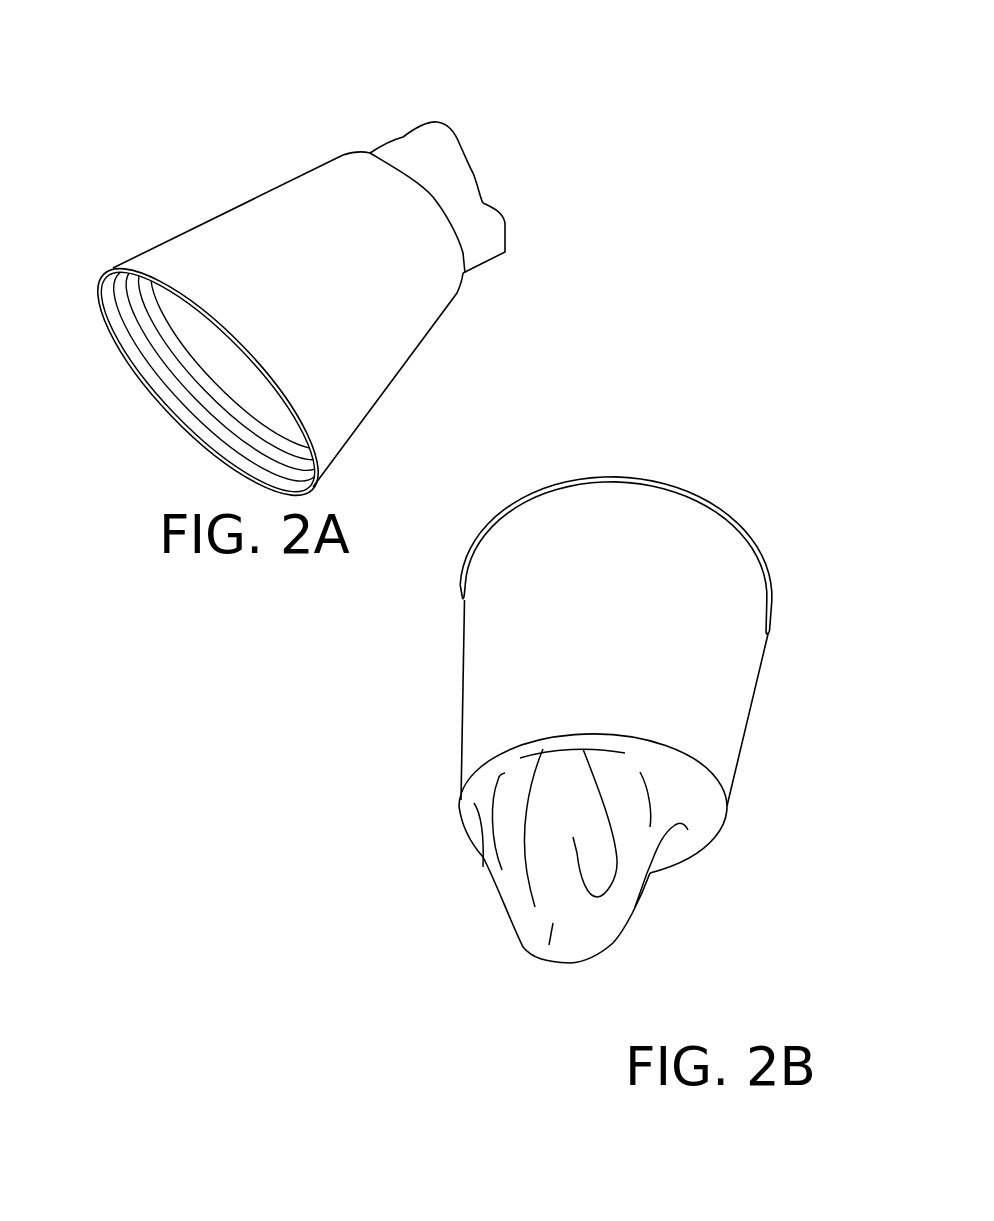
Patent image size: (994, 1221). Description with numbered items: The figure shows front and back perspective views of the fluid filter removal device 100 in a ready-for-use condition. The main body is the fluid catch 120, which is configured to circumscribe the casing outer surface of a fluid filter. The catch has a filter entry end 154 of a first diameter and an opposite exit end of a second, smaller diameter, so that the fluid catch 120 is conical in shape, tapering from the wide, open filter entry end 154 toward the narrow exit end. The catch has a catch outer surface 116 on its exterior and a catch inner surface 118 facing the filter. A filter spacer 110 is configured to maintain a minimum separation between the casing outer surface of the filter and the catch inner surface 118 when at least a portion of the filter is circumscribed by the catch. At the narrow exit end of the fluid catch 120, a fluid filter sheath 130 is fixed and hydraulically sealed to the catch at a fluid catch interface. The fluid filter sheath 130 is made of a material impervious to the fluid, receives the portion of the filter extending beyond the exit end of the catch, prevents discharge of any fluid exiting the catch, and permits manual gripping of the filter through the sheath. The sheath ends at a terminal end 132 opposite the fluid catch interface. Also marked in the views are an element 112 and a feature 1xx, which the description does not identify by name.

In FIG. 2A, the fluid filter removal device 100 is at (630, 115).
In FIG. 2A, the filter spacer 110 is at (667, 147).
In FIG. 2A, the spout / nipple 112 is at (480, 157).
In FIG. 2B, the spout / nipple 112 is at (642, 918).
In FIG. 2A, the catch outer surface 116 is at (403, 140).
In FIG. 2B, the catch outer surface 116 is at (697, 793).
In FIG. 2A, the catch inner surface 118 is at (130, 322).
In FIG. 2A, the fluid catch 120 is at (240, 227).
In FIG. 2B, the fluid catch 120 is at (578, 527).
In FIG. 2A, the fluid filter sheath 130 is at (425, 150).
In FIG. 2B, the fluid filter sheath 130 is at (482, 793).
In FIG. 2A, the terminal end 132 is at (483, 203).
In FIG. 2B, the terminal end 132 is at (542, 957).
In FIG. 2A, the filter entry end 154 is at (157, 417).
In FIG. 2B, the filter entry end 154 is at (597, 468).
In FIG. 2A, the unlabeled feature 1xx is at (478, 245).
In FIG. 2B, the unlabeled feature 1xx is at (533, 737).